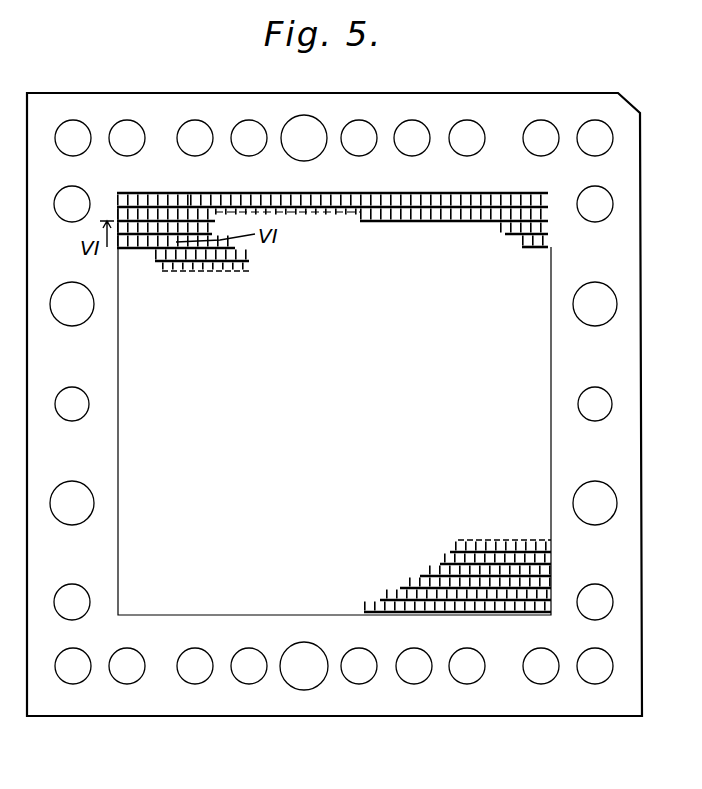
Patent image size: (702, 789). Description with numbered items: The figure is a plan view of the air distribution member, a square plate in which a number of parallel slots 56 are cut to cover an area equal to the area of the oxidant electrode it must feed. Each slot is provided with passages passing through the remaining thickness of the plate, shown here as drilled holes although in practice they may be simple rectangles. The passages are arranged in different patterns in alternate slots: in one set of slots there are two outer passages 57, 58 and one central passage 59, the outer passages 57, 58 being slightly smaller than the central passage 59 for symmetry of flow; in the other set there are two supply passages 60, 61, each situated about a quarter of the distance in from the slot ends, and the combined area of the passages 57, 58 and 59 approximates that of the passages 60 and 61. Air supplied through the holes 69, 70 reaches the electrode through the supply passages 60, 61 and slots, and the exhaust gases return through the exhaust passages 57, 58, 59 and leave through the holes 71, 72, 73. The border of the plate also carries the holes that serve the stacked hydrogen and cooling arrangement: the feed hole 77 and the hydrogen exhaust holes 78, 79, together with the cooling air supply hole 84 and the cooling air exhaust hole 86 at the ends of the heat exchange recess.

The slots 56 is at (549, 222).
The outer passage 57 is at (124, 192).
The outer passage 58 is at (546, 193).
The central passage 59 is at (333, 195).
The supply passage 60 is at (230, 205).
The supply passage 61 is at (433, 208).
The air supply hole 69 is at (246, 128).
The air supply hole 70 is at (413, 128).
The exhaust hole 71 is at (130, 676).
The exhaust hole 72 is at (364, 676).
The exhaust hole 73 is at (470, 678).
The feed hole 77 is at (72, 396).
The hydrogen exhaust hole 78 is at (66, 214).
The hydrogen exhaust hole 79 is at (73, 594).
The cooling air supply hole 84 is at (308, 126).
The cooling air exhaust hole 86 is at (73, 492).